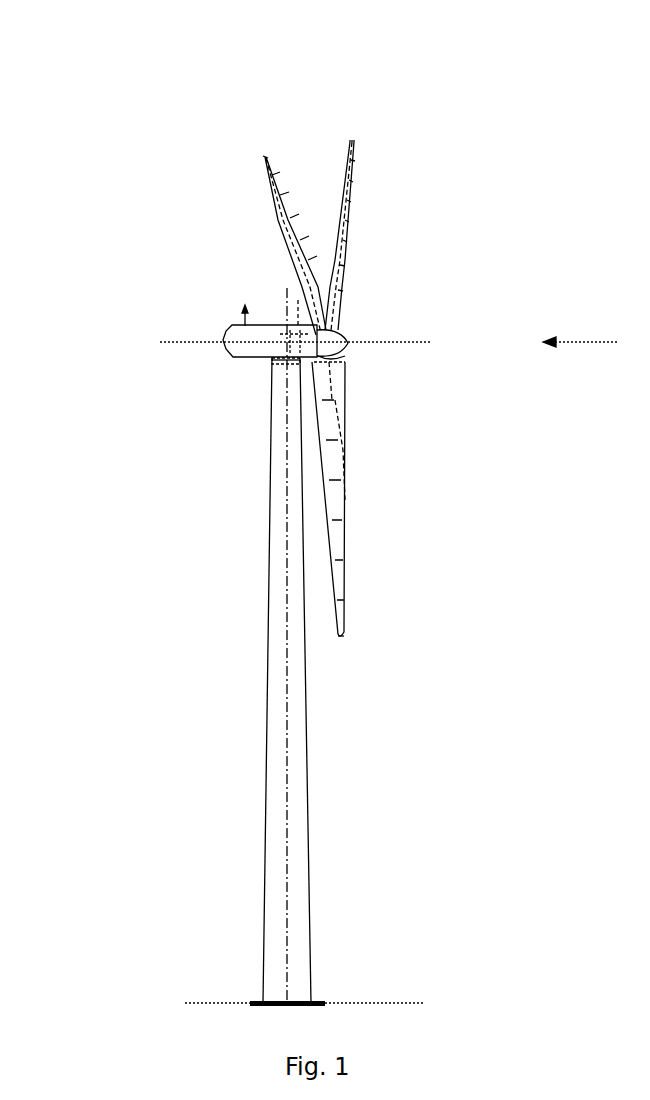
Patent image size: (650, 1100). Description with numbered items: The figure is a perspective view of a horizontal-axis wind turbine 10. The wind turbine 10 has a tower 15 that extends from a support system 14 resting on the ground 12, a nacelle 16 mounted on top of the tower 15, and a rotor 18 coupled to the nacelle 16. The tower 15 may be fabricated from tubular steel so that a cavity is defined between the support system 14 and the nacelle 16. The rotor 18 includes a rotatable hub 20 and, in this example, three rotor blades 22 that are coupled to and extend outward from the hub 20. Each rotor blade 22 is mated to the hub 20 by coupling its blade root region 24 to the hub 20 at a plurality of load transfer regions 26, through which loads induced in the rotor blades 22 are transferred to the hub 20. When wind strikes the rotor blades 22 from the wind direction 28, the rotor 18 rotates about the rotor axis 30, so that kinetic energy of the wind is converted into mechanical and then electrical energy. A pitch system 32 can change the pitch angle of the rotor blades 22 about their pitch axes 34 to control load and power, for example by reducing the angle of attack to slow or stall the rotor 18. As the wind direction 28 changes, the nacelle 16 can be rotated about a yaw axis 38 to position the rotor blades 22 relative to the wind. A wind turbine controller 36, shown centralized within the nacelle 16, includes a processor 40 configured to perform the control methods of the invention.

The wind turbine 10 is at (87, 165).
The ground 12 is at (200, 1003).
The support system 14 is at (255, 1003).
The tower 15 is at (282, 660).
The nacelle 16 is at (250, 357).
The rotor 18 is at (352, 261).
The rotatable hub 20 is at (345, 335).
The rotor blade 22 is at (285, 215).
The blade root region 24 is at (342, 425).
The load transfer regions 26 is at (336, 358).
The wind direction 28 is at (600, 342).
The rotor axis 30 is at (400, 342).
The pitch system 32 is at (333, 385).
The pitch axes 34 is at (262, 157).
The wind turbine controller 36 is at (295, 365).
The yaw axis 38 is at (289, 718).
The processor 40 is at (295, 292).